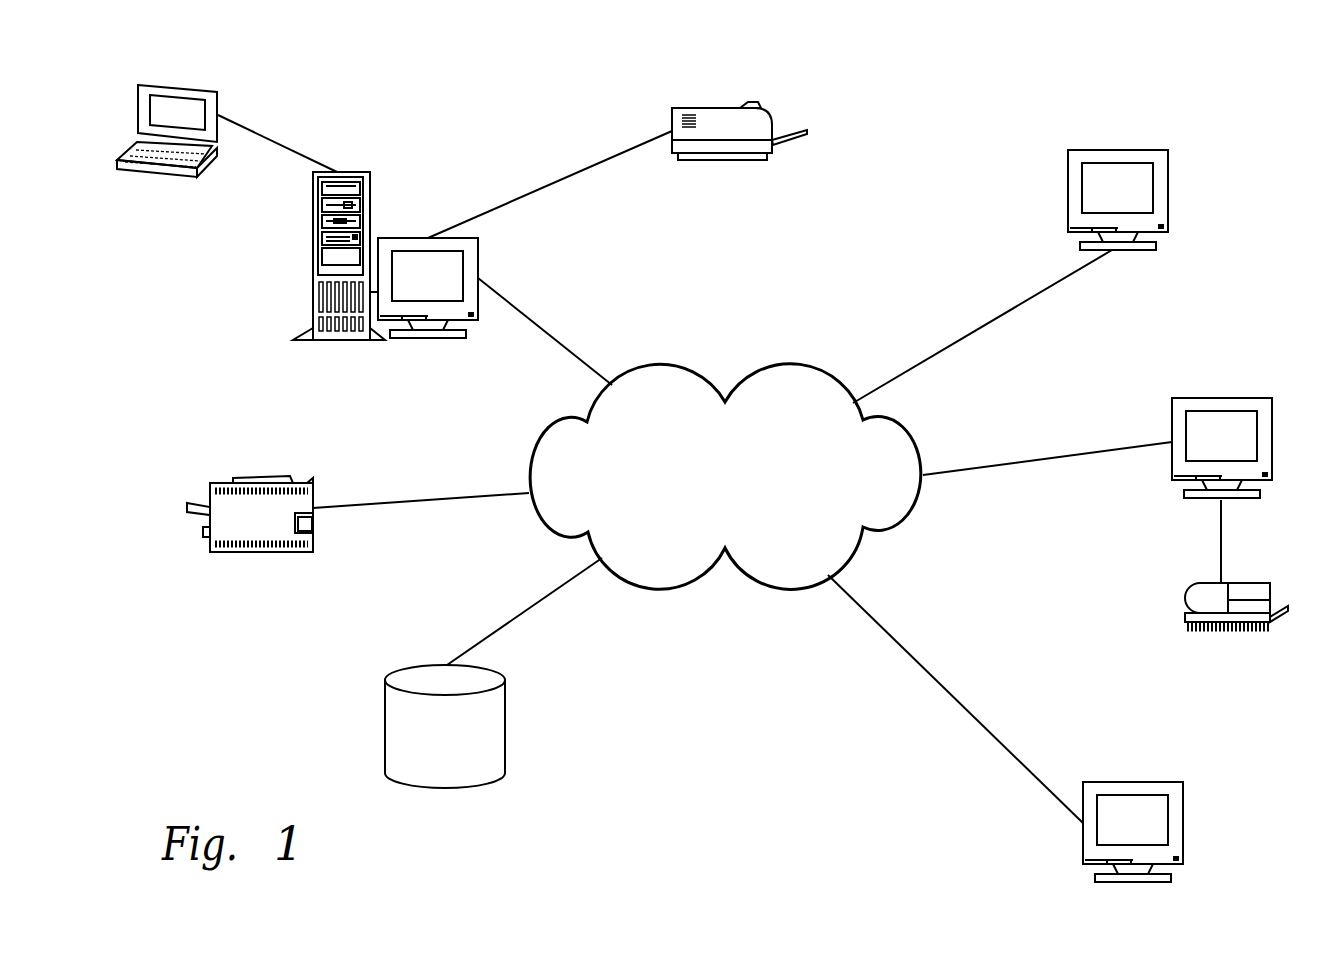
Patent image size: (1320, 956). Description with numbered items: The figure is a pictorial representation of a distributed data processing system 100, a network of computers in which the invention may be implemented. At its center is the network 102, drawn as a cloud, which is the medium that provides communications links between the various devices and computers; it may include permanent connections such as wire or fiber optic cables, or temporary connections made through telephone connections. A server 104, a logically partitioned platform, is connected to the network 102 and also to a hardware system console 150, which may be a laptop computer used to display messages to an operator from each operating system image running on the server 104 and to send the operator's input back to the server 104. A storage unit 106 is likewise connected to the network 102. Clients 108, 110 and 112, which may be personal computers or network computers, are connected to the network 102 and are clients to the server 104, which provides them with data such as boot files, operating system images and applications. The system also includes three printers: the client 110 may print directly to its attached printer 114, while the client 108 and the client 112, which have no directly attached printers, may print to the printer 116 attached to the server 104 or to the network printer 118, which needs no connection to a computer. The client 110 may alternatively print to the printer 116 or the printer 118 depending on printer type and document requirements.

The distributed data processing system 100 is at (752, 750).
The network 102 is at (752, 490).
The server 104 is at (403, 338).
The storage unit 106 is at (386, 708).
The client 108 is at (1141, 150).
The client 110 is at (1242, 398).
The client 112 is at (1157, 782).
The printer 114 is at (1233, 632).
The printer 116 is at (731, 160).
The printer 118 is at (242, 552).
The hardware system console 150 is at (156, 172).